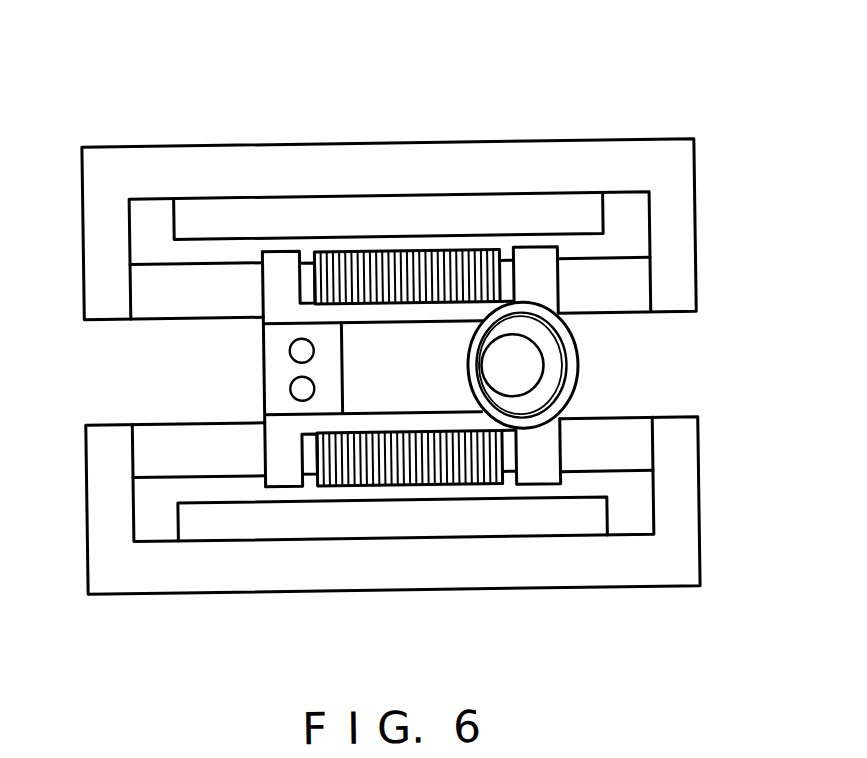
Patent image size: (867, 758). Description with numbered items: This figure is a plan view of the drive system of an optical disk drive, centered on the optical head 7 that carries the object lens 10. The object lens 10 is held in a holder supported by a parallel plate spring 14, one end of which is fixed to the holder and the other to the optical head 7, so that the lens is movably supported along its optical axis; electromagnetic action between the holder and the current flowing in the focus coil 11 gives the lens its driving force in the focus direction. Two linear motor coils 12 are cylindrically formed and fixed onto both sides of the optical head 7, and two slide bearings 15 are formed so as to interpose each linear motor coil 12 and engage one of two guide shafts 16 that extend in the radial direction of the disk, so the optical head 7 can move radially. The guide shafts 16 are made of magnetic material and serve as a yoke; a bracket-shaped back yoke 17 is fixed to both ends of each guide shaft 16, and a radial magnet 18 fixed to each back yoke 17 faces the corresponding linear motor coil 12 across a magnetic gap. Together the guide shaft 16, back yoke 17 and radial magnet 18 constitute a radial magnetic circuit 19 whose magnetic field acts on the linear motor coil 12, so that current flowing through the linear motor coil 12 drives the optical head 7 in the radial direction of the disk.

The optical head 7 is at (263, 345).
The object lens 10 is at (493, 361).
The focus coil 11 is at (570, 368).
The linear motor coil 12 is at (344, 259).
The parallel plate spring 14 is at (358, 357).
The slide bearing 15 is at (281, 274).
The guide shaft 16 is at (154, 297).
The back yoke 17 is at (403, 148).
The radial magnet 18 is at (499, 206).
The radial magnetic circuit 19 is at (273, 140).